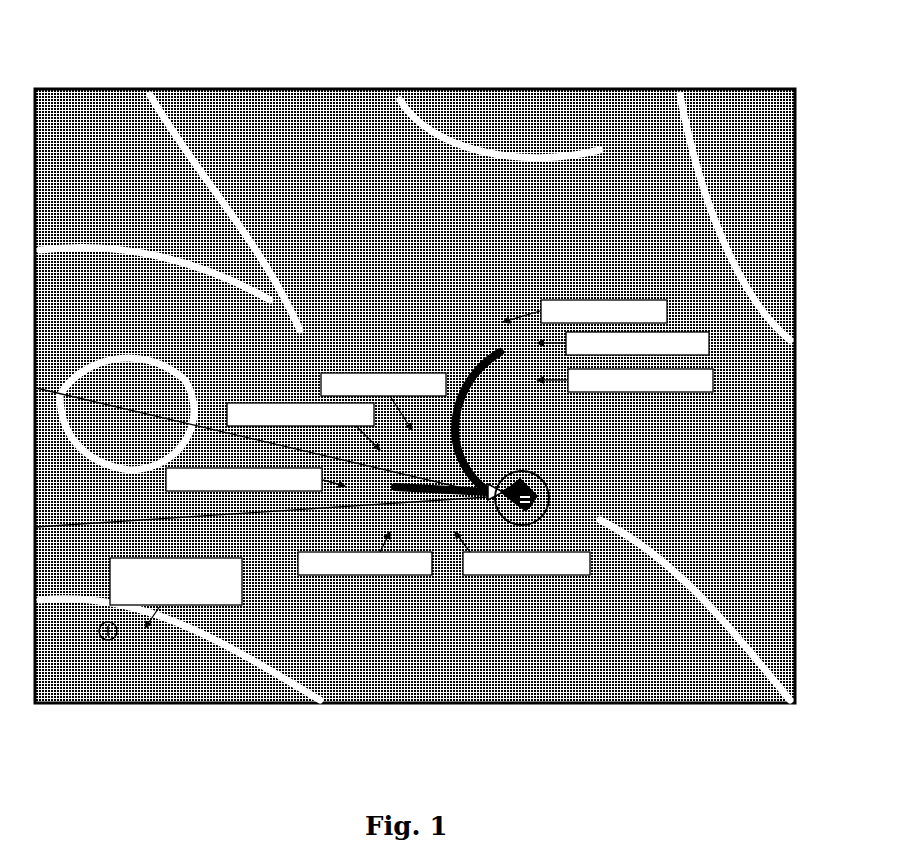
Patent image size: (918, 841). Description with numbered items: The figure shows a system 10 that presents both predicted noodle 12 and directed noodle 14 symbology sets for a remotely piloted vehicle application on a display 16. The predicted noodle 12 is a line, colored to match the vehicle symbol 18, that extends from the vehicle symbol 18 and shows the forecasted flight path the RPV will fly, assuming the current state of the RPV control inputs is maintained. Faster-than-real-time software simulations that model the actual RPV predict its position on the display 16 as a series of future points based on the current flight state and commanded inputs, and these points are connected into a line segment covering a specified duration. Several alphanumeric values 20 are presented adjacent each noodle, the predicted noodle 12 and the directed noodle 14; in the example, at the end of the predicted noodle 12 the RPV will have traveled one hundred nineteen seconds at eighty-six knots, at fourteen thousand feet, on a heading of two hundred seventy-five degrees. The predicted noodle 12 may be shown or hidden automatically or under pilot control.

The system 10 is at (398, 62).
The display 16 is at (617, 104).
The directed noodle 14 is at (470, 375).
The predicted noodle 12 is at (418, 500).
The vehicle symbol 18 is at (550, 497).
The alphanumeric values 20 is at (713, 380).